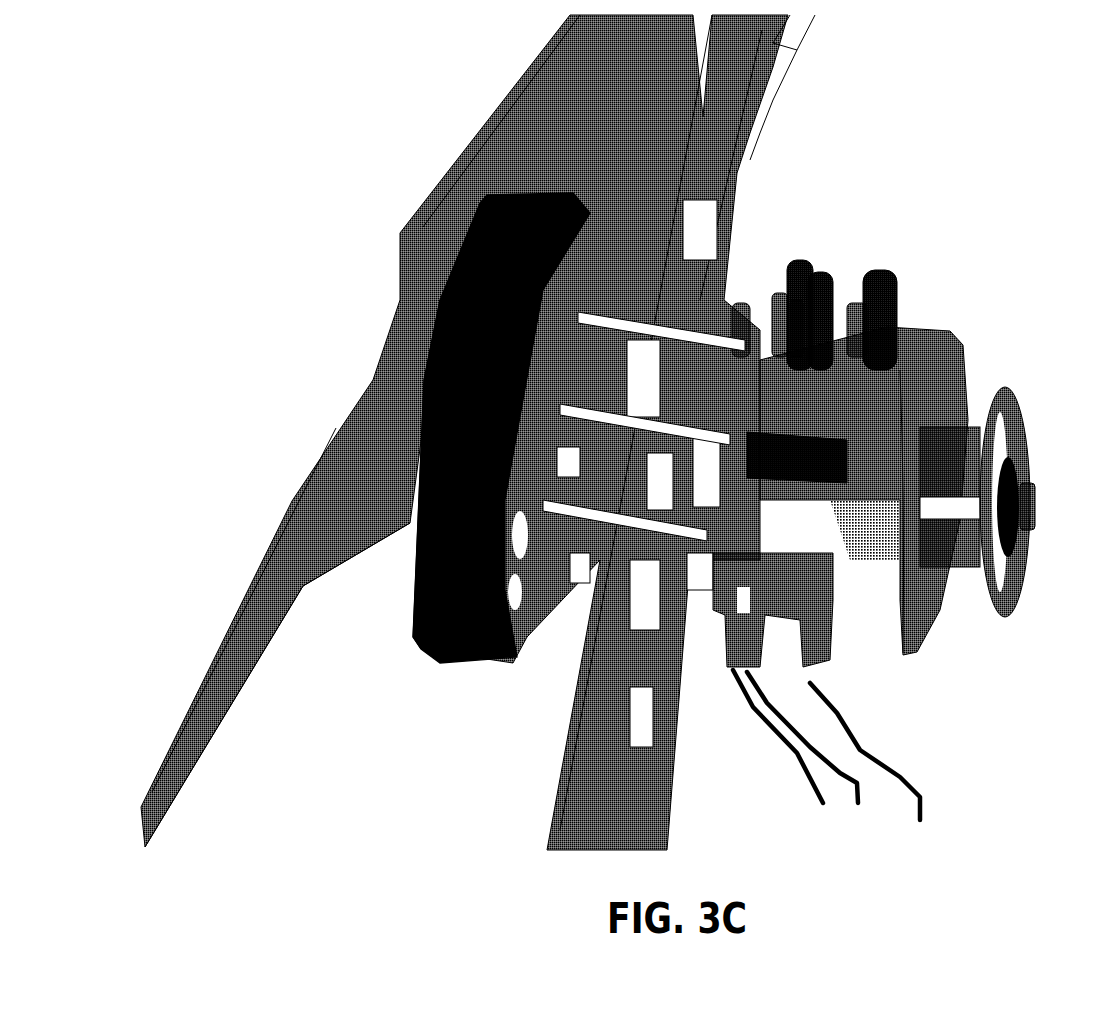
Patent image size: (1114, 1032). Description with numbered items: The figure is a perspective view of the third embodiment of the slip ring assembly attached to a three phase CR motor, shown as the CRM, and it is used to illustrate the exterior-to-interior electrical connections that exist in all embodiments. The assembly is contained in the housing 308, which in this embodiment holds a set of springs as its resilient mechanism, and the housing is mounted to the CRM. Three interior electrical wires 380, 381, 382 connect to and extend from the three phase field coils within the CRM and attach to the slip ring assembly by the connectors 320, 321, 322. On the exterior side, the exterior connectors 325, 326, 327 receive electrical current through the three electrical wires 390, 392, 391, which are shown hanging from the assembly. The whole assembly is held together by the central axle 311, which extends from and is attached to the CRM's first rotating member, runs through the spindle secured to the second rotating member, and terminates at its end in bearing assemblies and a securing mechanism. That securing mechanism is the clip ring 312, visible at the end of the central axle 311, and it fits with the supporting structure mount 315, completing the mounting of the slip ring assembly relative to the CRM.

The housing 308 is at (917, 337).
The central axle 311 is at (1037, 510).
The clip ring 312 is at (1020, 480).
The supporting structure mount 315 is at (973, 597).
The connector 320 is at (690, 540).
The connector 321 is at (707, 423).
The connector 322 is at (743, 310).
The exterior connector 325 is at (800, 263).
The exterior connector 326 is at (813, 277).
The exterior connector 327 is at (887, 280).
The interior electrical wire 380 is at (605, 515).
The interior electrical wire 381 is at (603, 420).
The interior electrical wire 382 is at (655, 320).
The electrical wire 390 is at (795, 777).
The electrical wire 391 is at (847, 787).
The electrical wire 392 is at (900, 777).
The CR motor CRM is at (410, 575).